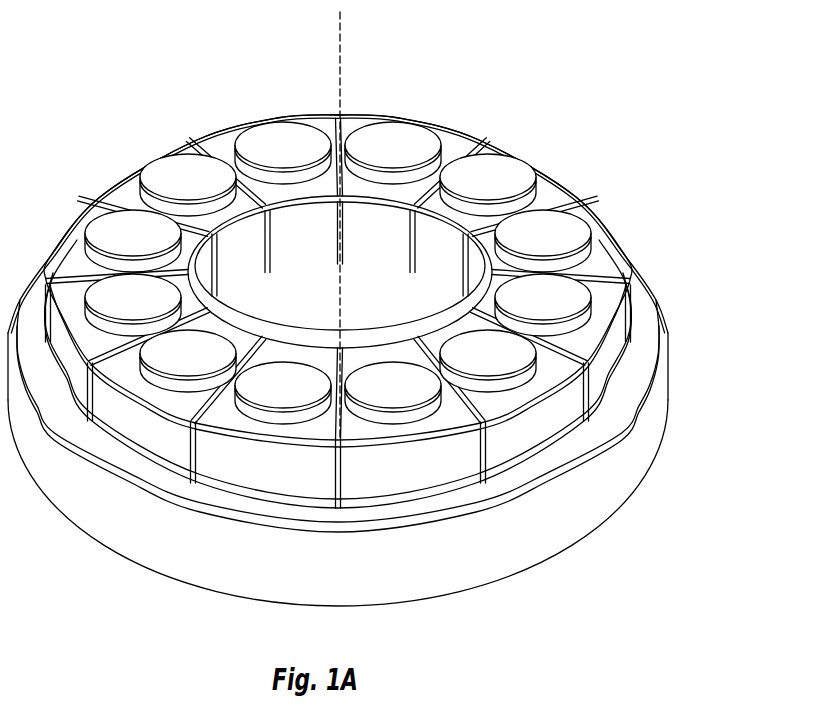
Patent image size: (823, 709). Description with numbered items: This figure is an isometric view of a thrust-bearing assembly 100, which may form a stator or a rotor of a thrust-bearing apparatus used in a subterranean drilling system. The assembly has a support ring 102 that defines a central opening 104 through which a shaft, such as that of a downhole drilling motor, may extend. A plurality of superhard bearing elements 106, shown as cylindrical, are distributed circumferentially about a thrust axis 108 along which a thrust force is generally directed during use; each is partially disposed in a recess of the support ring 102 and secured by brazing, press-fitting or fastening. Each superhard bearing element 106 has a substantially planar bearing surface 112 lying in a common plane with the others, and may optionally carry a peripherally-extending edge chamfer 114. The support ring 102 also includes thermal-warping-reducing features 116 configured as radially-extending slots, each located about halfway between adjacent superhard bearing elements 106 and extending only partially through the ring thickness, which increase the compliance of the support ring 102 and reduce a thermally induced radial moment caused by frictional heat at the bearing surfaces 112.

The thrust-bearing assembly 100 is at (518, 93).
The support ring 102 is at (657, 440).
The opening 104 is at (353, 343).
The superhard bearing elements 106 is at (593, 314).
The thrust axis 108 is at (342, 36).
The bearing surface 112 is at (623, 282).
The edge chamfer 114 is at (570, 333).
The thermal-warping-reducing features 116 is at (586, 193).